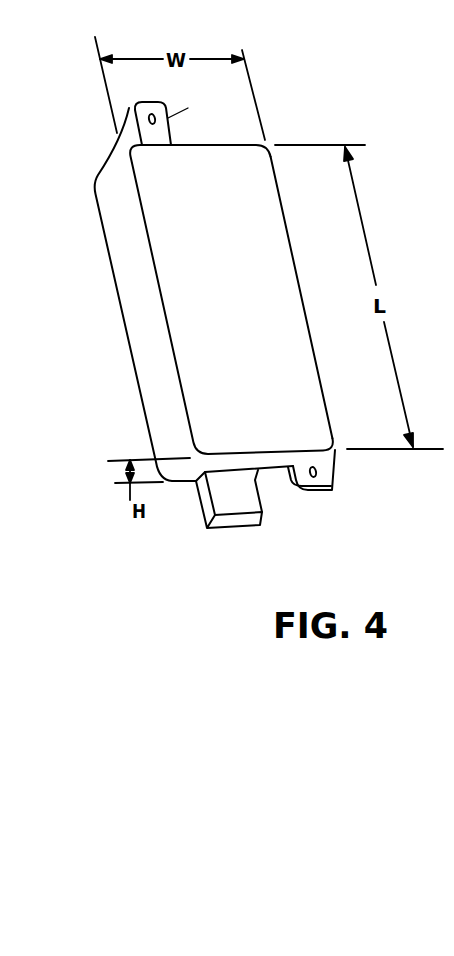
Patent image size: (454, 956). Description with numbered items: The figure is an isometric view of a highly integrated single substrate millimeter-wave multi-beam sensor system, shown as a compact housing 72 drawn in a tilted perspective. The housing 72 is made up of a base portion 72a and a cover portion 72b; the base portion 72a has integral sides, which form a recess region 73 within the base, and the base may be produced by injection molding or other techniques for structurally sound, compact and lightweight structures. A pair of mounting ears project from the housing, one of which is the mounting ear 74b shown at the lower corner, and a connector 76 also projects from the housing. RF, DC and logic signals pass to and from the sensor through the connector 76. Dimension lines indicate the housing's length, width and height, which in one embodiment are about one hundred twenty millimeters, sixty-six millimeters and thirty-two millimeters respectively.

The housing 72 is at (95, 265).
The base portion 72a is at (133, 365).
The cover portion 72b is at (248, 296).
The recess region 73 is at (287, 230).
The mounting ear 74b is at (333, 483).
The connector 76 is at (262, 512).